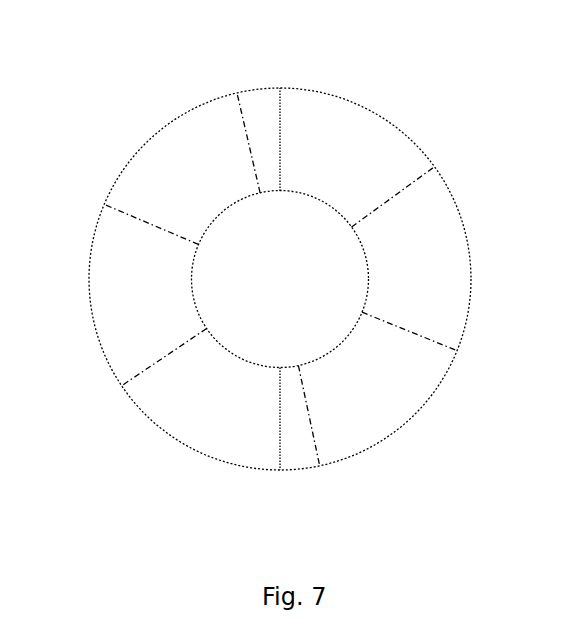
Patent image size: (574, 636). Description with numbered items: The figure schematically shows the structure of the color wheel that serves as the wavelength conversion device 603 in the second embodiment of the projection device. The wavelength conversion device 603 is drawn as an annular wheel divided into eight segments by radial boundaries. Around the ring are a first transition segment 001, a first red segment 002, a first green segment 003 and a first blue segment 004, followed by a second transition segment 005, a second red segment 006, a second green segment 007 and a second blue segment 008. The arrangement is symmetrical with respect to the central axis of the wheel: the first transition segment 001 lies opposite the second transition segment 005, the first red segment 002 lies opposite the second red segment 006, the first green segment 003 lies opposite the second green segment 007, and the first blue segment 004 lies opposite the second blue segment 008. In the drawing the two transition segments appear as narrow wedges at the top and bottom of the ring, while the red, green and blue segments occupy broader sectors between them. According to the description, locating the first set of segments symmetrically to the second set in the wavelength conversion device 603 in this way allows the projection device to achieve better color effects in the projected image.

The first transition segment 001 is at (263, 113).
The first red segment 002 is at (395, 152).
The first green segment 003 is at (425, 303).
The first blue segment 004 is at (395, 368).
The second transition segment 005 is at (293, 442).
The second red segment 006 is at (190, 430).
The second green segment 007 is at (132, 355).
The second blue segment 008 is at (180, 142).
The wavelength conversion device 603 is at (377, 80).